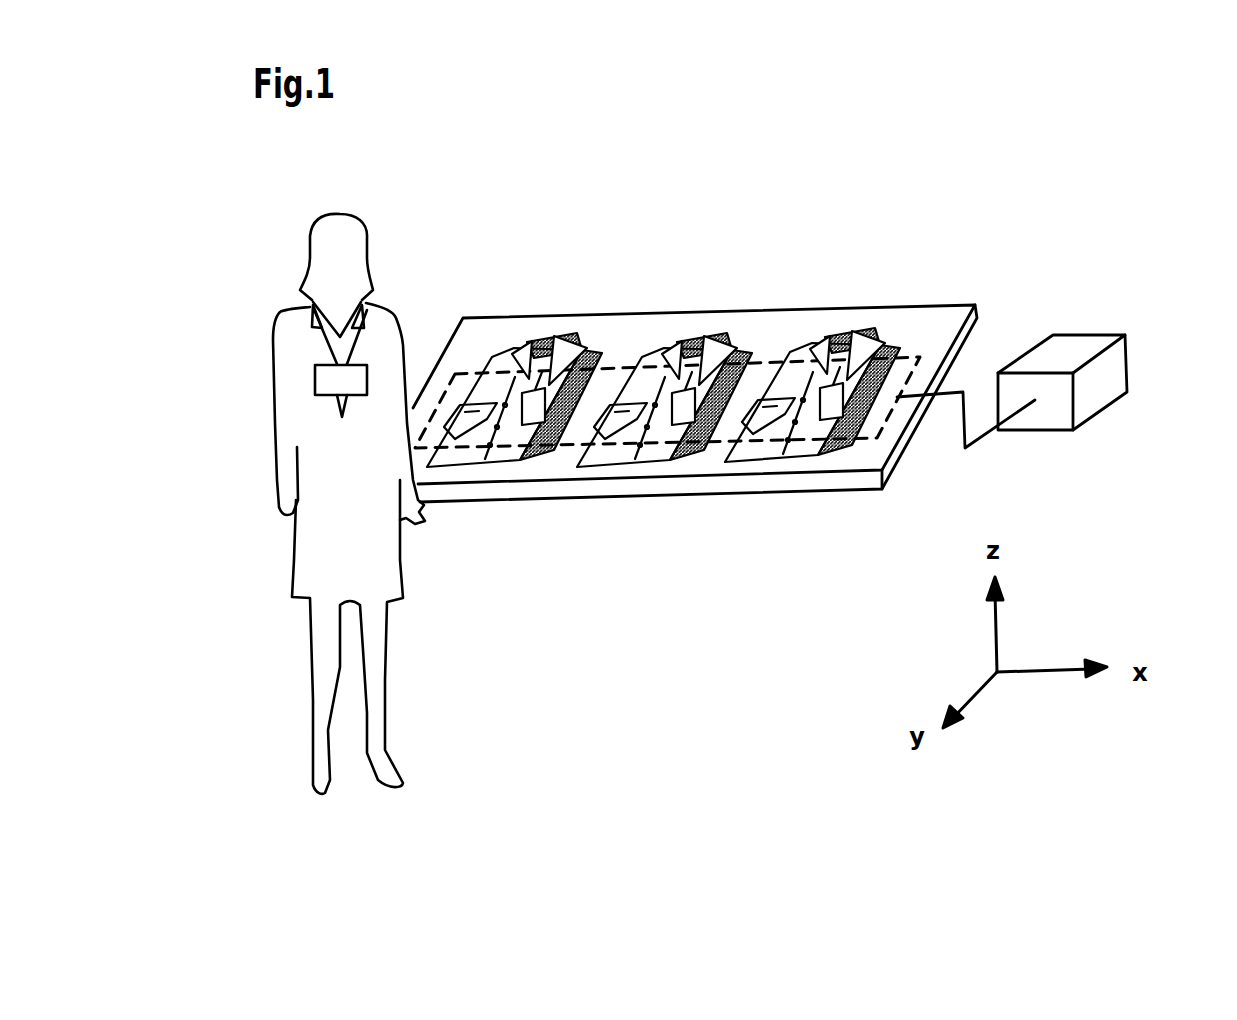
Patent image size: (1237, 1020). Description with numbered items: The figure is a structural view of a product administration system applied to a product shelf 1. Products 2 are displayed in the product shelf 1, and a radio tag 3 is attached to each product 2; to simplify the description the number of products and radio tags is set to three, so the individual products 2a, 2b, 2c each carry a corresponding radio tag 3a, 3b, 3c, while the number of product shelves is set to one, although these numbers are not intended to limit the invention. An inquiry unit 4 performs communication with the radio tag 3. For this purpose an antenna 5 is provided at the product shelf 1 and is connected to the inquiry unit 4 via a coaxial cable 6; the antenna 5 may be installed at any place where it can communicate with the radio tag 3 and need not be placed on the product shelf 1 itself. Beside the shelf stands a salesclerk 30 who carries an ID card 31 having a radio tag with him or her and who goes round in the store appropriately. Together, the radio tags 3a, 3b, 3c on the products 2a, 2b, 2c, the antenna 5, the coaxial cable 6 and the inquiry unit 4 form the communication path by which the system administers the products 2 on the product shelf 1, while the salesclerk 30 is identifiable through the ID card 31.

The product shelf 1 is at (975, 332).
The product 2 is at (947, 190).
The product 2a is at (585, 353).
The product 2b is at (735, 346).
The product 2c is at (892, 342).
The radio tag 3 is at (458, 612).
The radio tag 3a is at (522, 425).
The radio tag 3b is at (672, 425).
The radio tag 3c is at (820, 420).
The inquiry unit 4 is at (1130, 347).
The antenna 5 is at (460, 370).
The coaxial cable 6 is at (987, 430).
The salesclerk 30 is at (297, 303).
The ID card 31 is at (333, 382).